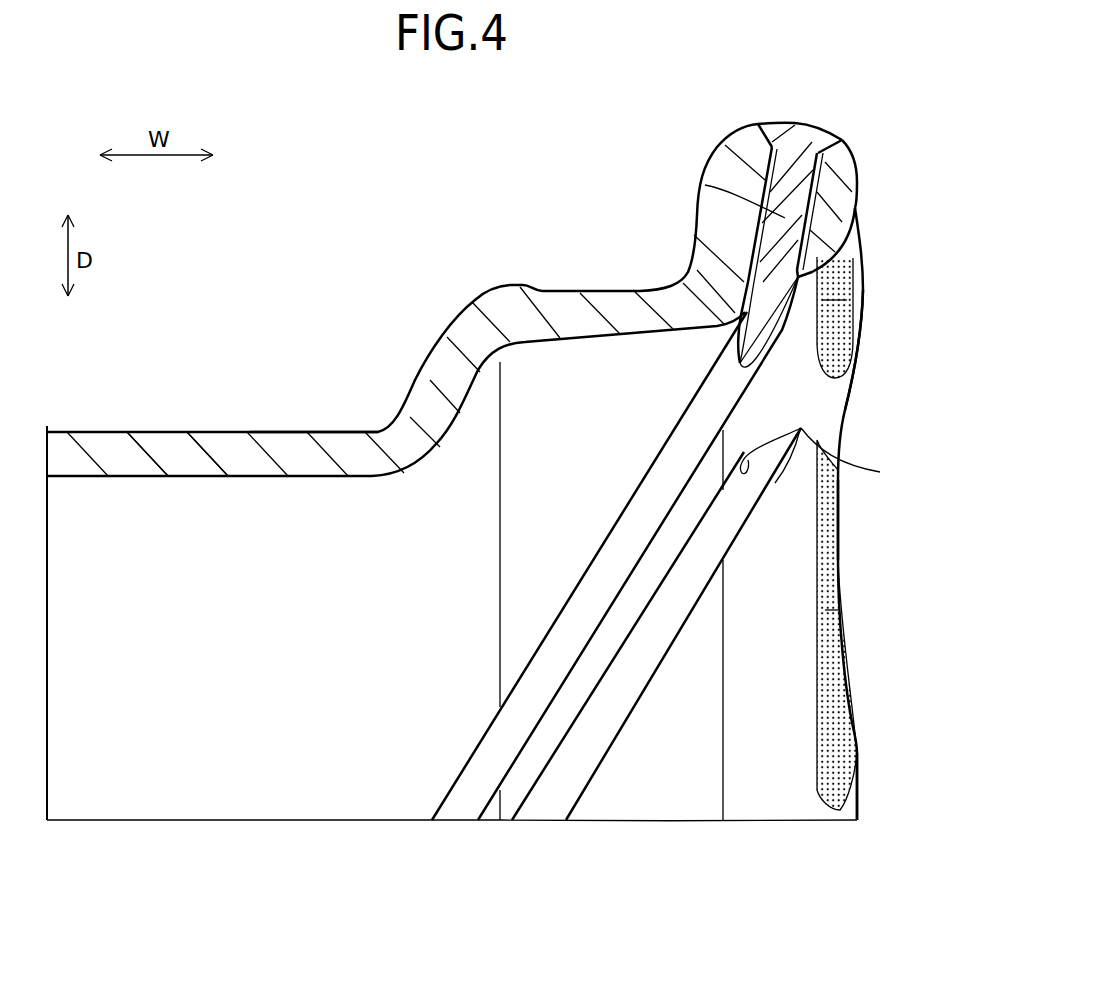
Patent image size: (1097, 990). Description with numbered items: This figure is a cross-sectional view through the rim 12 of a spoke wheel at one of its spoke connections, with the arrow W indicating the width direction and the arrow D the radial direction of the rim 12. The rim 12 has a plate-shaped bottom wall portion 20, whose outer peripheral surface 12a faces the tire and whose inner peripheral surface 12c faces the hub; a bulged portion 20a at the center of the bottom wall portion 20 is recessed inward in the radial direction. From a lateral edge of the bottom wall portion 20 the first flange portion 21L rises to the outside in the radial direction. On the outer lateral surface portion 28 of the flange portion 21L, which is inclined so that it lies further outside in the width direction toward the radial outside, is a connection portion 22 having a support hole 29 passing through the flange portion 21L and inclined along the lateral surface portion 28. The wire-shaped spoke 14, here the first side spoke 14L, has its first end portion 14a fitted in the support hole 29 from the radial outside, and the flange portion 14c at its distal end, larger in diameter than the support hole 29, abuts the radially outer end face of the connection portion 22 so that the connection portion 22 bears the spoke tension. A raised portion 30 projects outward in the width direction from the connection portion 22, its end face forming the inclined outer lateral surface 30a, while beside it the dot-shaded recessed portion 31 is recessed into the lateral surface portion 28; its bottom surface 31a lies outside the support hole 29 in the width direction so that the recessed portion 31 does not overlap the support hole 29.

The rim 12 is at (76, 428).
The outer peripheral surface 12a is at (322, 430).
The inner peripheral surface 12c is at (322, 477).
The spoke 14 is at (604, 617).
The first side spoke 14L is at (557, 663).
The first end portion 14a is at (722, 185).
The flange portion 14c is at (793, 130).
The bottom wall portion 20 is at (556, 313).
The bulged portion 20a is at (165, 450).
The first flange portion 21L is at (747, 152).
The connection portion 22 is at (845, 143).
The lateral surface portion 28 is at (850, 214).
The support hole 29 is at (800, 178).
The raised portion 30 is at (860, 187).
The outer lateral surface 30a is at (858, 198).
The recessed portion 31 is at (822, 294).
The bottom surface 31a is at (838, 300).